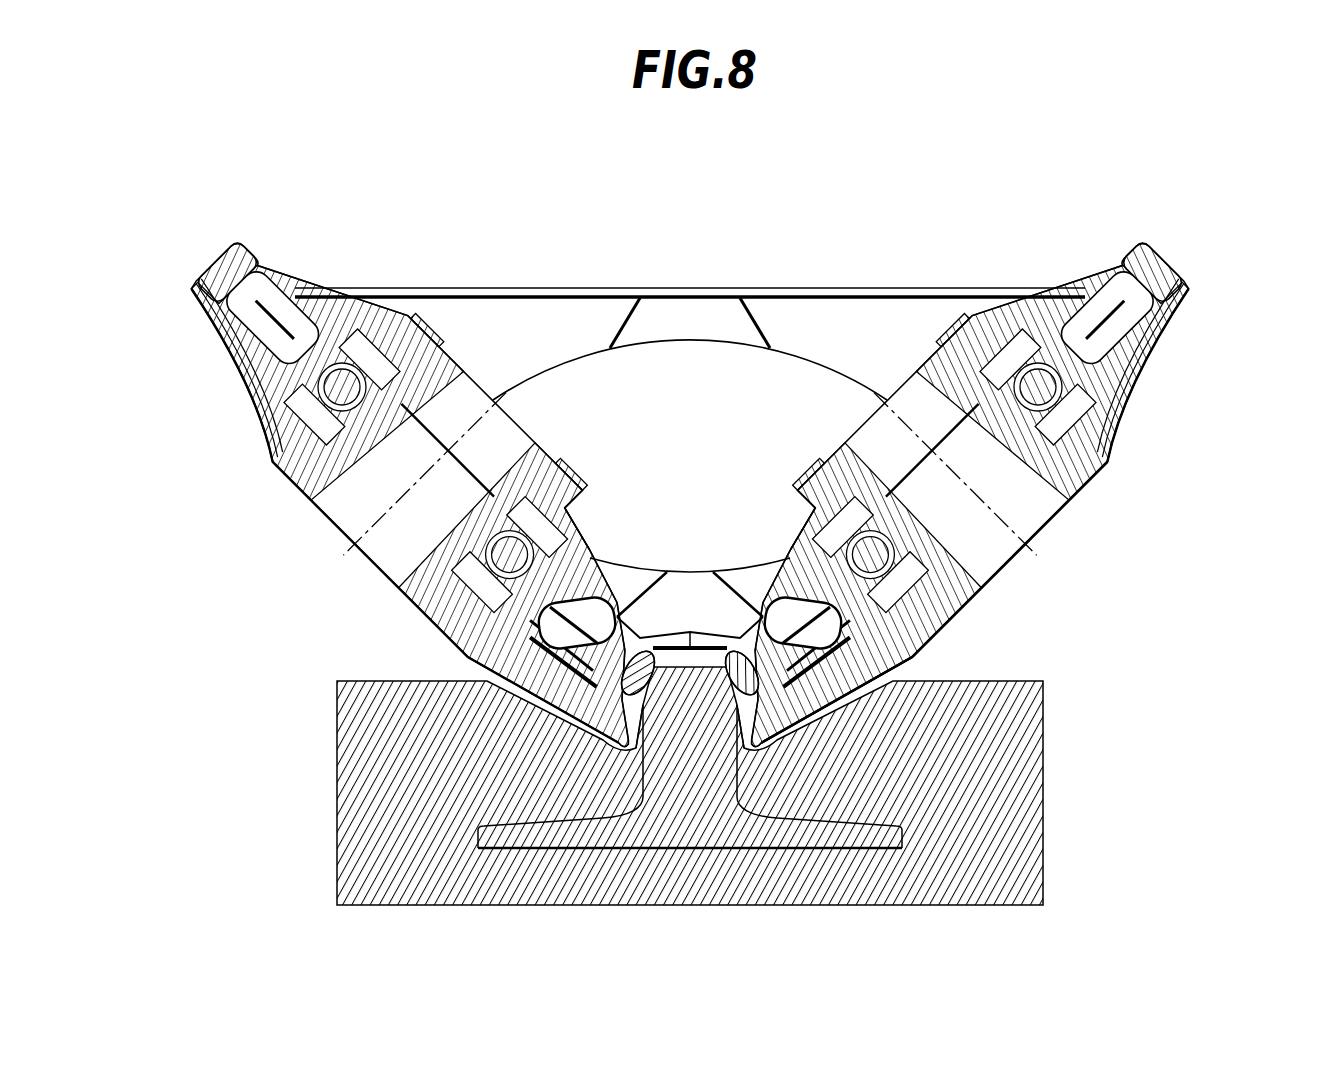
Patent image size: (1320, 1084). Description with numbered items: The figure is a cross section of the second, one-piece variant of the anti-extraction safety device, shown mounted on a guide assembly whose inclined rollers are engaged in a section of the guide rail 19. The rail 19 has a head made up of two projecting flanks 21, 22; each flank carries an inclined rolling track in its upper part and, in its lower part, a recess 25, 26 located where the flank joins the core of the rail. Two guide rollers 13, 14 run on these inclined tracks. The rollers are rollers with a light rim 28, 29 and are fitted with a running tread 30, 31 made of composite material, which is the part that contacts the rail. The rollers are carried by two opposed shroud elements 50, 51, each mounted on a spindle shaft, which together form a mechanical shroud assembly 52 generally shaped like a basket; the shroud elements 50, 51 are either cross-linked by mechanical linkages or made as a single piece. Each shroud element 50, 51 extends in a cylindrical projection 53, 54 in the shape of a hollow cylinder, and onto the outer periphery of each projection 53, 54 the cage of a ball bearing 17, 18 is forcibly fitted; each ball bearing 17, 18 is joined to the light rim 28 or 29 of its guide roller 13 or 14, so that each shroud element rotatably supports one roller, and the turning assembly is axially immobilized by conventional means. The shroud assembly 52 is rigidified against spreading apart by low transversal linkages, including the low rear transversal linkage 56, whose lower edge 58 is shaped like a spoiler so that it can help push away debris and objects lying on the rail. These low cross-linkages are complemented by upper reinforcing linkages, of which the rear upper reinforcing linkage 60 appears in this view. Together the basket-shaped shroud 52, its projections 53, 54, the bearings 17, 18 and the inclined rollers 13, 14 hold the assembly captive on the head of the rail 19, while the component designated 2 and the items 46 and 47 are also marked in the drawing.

The transmission 2 is at (1186, 108).
The guide roller 13 is at (237, 243).
The guide roller 14 is at (1143, 243).
The ball bearing 17 is at (351, 368).
The ball bearing 18 is at (1000, 355).
The guide rail 19 is at (688, 815).
The projecting flank 21 is at (628, 708).
The projecting flank 22 is at (752, 708).
The recess 25 is at (612, 830).
The recess 26 is at (768, 830).
The light rim 28 is at (270, 278).
The light rim 29 is at (1110, 278).
The running tread 30 is at (222, 256).
The running tread 31 is at (1163, 256).
The first roller 46 is at (618, 738).
The second roller 47 is at (762, 738).
The shroud element 50 is at (283, 477).
The shroud element 51 is at (1113, 466).
The mechanical shroud assembly 52 is at (1162, 410).
The cylindrical projection 53 is at (405, 322).
The cylindrical projection 54 is at (965, 322).
The low rear transversal linkage 56 is at (697, 603).
The lower edge 58 is at (680, 632).
The upper reinforcing linkage 60 is at (690, 313).